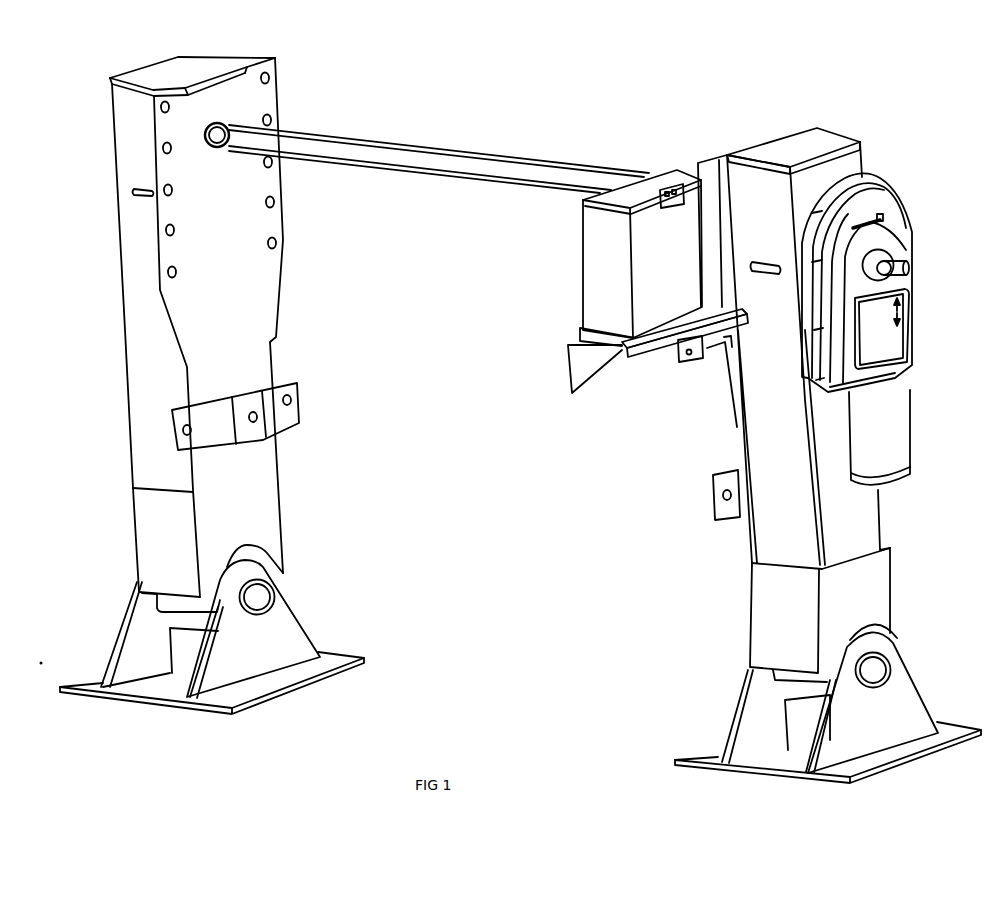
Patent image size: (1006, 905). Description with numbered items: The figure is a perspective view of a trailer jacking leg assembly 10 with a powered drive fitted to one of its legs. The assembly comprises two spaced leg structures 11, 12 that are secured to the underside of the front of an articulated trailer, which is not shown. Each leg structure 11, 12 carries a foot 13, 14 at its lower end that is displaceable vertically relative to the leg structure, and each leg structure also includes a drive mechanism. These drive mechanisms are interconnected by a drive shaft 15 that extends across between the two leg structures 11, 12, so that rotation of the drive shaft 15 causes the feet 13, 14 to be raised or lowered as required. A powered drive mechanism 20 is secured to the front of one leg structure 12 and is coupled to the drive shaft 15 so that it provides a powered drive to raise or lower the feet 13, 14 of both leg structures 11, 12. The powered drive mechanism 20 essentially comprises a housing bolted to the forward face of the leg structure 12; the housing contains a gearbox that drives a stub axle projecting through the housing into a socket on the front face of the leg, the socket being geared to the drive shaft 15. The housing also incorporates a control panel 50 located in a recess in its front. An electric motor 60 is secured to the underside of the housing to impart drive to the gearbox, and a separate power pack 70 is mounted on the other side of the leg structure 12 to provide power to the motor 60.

The trailer jacking leg assembly 10 is at (590, 121).
The leg structure 11 is at (158, 390).
The leg structure 12 is at (850, 523).
The foot 13 is at (277, 650).
The foot 14 is at (876, 730).
The drive shaft 15 is at (440, 170).
The powered drive mechanism 20 is at (893, 247).
The control panel 50 is at (887, 333).
The electric motor 60 is at (885, 438).
The power pack 70 is at (597, 267).